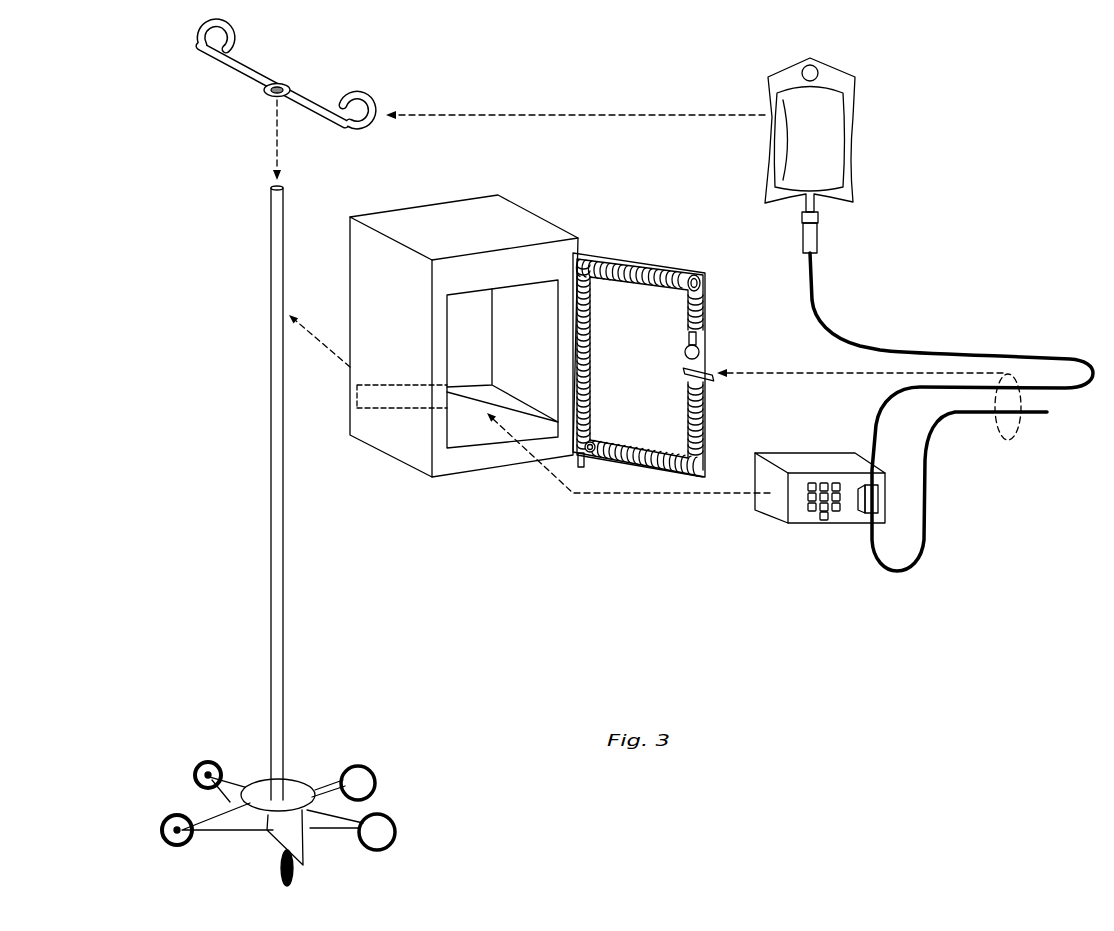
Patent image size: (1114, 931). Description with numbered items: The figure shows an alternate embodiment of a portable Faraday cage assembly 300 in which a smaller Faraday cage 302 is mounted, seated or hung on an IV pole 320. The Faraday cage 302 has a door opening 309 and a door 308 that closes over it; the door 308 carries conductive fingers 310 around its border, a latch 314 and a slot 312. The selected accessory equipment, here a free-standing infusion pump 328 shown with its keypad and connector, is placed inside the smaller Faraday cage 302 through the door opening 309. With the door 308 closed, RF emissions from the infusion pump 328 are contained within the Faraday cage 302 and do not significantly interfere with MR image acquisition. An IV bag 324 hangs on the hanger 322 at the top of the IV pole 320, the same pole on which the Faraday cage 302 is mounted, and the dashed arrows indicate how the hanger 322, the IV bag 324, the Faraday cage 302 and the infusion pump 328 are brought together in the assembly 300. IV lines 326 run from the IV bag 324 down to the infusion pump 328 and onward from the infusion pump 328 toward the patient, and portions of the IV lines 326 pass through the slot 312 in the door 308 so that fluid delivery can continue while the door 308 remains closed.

The Faraday cage assembly 300 is at (547, 521).
The Faraday cage 302 is at (415, 450).
The door 308 is at (622, 298).
The door opening 309 is at (445, 325).
The conductive fingers 310 is at (702, 297).
The slot 312 is at (702, 368).
The latch 314 is at (700, 335).
The IV pole 320 is at (277, 622).
The hanger 322 is at (232, 73).
The IV bag 324 is at (823, 142).
The IV lines 326 is at (952, 350).
The infusion pump 328 is at (775, 508).